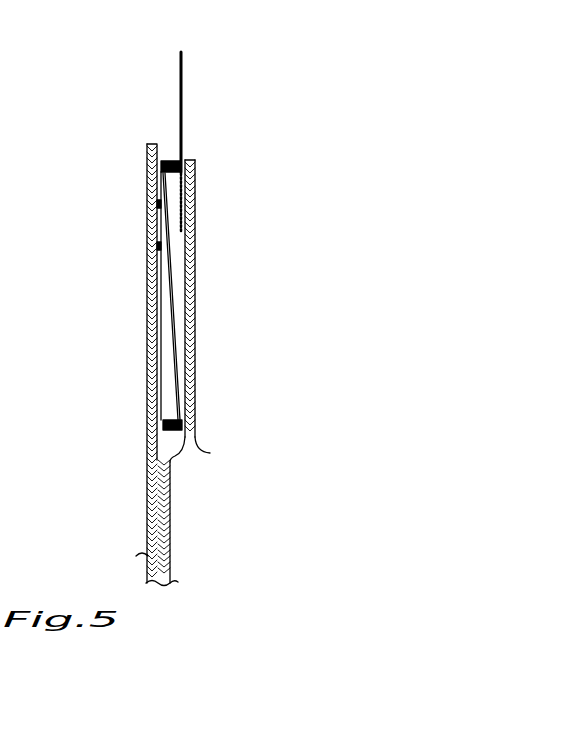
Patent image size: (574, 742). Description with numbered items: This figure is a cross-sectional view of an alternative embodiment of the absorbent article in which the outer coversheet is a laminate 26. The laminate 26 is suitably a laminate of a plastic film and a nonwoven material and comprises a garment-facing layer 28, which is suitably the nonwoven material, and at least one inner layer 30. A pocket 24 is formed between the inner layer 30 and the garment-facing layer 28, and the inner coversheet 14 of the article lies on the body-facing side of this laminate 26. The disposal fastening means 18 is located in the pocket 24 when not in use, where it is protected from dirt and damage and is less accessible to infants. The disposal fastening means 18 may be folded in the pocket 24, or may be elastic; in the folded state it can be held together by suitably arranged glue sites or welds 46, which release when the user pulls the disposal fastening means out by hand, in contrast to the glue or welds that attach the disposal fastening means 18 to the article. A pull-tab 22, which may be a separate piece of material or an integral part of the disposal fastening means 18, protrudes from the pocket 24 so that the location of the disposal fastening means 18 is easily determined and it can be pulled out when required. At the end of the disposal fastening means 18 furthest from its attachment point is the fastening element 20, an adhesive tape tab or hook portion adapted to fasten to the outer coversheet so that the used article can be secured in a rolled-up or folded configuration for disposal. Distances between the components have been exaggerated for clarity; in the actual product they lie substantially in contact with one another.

The inner coversheet 14 is at (148, 527).
The disposal fastening means 18 is at (173, 267).
The fastening element 20 is at (197, 186).
The pull-tab 22 is at (183, 88).
The pocket 24 is at (240, 249).
The laminate 26 is at (174, 569).
The garment-facing layer 28 is at (195, 161).
The inner layer 30 is at (151, 146).
The glue sites or welds 46 is at (170, 160).